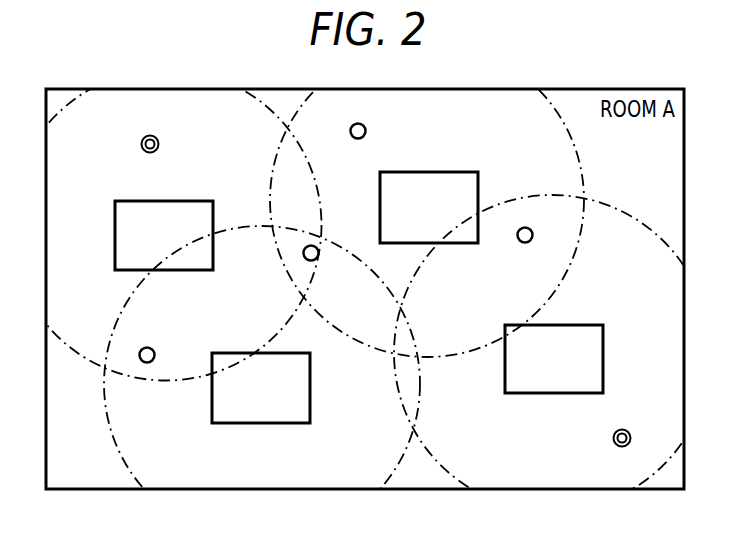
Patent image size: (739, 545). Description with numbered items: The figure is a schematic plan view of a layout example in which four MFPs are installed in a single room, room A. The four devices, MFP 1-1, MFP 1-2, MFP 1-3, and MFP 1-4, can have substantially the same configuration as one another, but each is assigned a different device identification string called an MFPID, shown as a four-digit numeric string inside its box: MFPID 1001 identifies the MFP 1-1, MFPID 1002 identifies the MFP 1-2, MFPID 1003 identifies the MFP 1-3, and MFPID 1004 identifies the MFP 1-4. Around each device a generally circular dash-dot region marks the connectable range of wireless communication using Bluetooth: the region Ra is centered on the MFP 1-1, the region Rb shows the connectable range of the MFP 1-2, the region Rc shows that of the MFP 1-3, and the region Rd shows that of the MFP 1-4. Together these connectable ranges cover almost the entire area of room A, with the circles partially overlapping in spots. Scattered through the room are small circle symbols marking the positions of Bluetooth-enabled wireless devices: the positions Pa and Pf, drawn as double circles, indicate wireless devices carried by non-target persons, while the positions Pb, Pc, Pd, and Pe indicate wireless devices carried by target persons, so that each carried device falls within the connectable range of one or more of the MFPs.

The MFP 1-1 is at (164, 216).
The MFP 1-2 is at (429, 188).
The MFP 1-3 is at (261, 405).
The MFP 1-4 is at (554, 379).
The MFPID 1001 is at (185, 185).
The MFPID 1002 is at (452, 158).
The MFPID 1003 is at (260, 433).
The MFPID 1004 is at (553, 410).
The region Ra is at (86, 360).
The region Rb is at (582, 156).
The region Rc is at (117, 451).
The region Rd is at (633, 220).
The position of wireless device Pa is at (151, 133).
The position of wireless device Pb is at (360, 120).
The position of wireless device Pc is at (300, 247).
The position of wireless device Pd is at (150, 344).
The position of wireless device Pe is at (526, 224).
The position of wireless device Pf is at (620, 427).